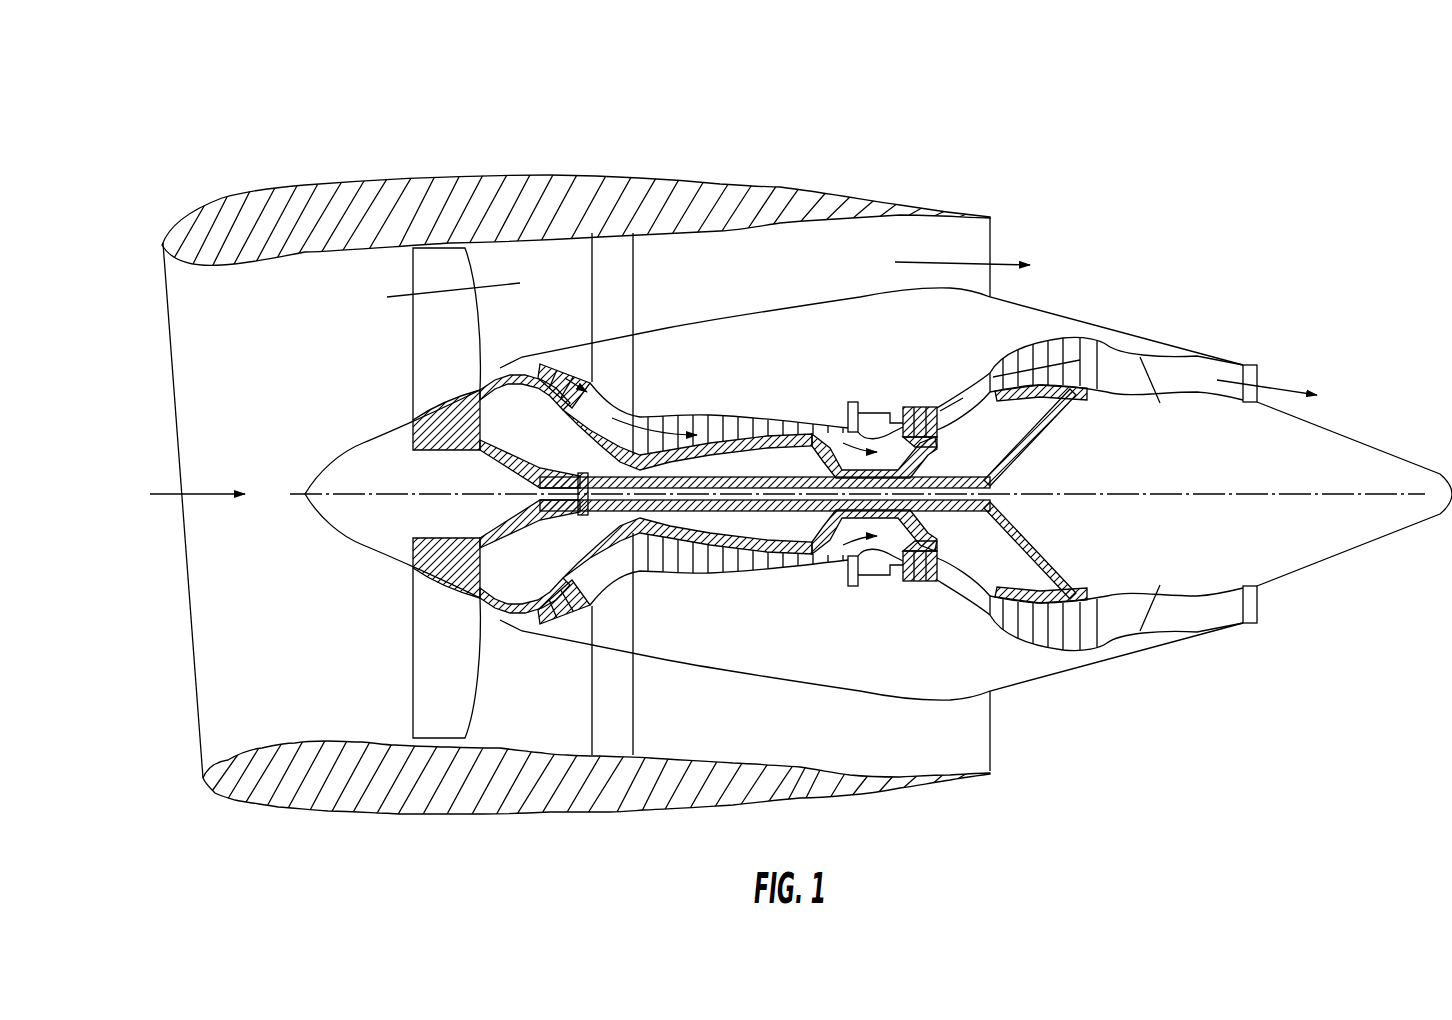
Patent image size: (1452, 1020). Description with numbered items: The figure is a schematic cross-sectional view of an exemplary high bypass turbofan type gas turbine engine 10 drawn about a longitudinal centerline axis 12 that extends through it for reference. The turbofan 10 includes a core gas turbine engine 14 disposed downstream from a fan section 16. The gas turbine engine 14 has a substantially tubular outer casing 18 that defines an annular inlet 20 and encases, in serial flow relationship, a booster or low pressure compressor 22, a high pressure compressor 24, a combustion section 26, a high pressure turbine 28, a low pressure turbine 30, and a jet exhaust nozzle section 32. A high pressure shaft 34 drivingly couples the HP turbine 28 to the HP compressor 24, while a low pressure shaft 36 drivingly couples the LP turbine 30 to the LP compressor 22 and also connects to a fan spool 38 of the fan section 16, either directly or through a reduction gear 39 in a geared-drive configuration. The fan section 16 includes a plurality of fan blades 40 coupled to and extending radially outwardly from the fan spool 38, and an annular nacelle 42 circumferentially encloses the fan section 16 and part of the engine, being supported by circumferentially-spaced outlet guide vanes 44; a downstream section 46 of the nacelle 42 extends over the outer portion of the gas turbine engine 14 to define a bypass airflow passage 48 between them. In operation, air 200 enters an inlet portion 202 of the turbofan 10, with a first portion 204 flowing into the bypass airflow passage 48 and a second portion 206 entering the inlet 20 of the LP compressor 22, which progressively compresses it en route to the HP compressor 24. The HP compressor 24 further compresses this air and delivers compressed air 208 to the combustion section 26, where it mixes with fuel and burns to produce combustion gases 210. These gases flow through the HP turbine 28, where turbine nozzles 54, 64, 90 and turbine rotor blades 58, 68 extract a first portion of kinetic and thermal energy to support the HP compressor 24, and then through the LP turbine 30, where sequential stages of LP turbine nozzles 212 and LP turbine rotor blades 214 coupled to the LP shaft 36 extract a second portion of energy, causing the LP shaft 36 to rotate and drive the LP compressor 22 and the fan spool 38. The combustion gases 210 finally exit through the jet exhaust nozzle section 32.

The turbofan 10 is at (1163, 189).
The centerline axis 12 is at (1187, 492).
The gas turbine engine 14 is at (830, 370).
The fan section 16 is at (466, 156).
The outer casing 18 is at (820, 688).
The inlet 20 is at (530, 617).
The low pressure compressor 22 is at (583, 598).
The high pressure compressor 24 is at (672, 568).
The combustion section 26 is at (872, 570).
The high pressure turbine 28 is at (935, 568).
The low pressure turbine 30 is at (1088, 652).
The jet exhaust nozzle section 32 is at (1263, 378).
The high pressure shaft 34 is at (877, 457).
The low pressure shaft 36 is at (587, 470).
The fan spool 38 is at (475, 452).
The reduction gear 39 is at (584, 514).
The fan blades 40 is at (407, 672).
The nacelle 42 is at (463, 813).
The outlet guide vanes 44 is at (638, 272).
The downstream section 46 is at (880, 196).
The bypass airflow passage 48 is at (780, 291).
The turbine nozzles 54 is at (890, 578).
The turbine rotor blades 58 is at (905, 580).
The turbine nozzles 64 is at (918, 580).
The turbine rotor blades 68 is at (933, 585).
The turbine nozzles 90 is at (943, 592).
The air 200 is at (187, 490).
The inlet portion 202 is at (203, 770).
The first portion of the air 204 is at (432, 283).
The second portion of the air 206 is at (504, 367).
The compressed air 208 is at (840, 420).
The combustion gases 210 is at (925, 403).
The LP turbine nozzles 212 is at (1003, 357).
The LP turbine rotor blades 214 is at (1008, 350).